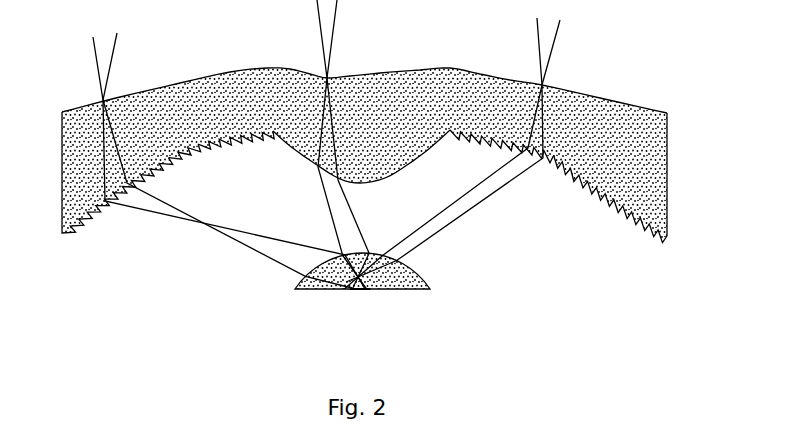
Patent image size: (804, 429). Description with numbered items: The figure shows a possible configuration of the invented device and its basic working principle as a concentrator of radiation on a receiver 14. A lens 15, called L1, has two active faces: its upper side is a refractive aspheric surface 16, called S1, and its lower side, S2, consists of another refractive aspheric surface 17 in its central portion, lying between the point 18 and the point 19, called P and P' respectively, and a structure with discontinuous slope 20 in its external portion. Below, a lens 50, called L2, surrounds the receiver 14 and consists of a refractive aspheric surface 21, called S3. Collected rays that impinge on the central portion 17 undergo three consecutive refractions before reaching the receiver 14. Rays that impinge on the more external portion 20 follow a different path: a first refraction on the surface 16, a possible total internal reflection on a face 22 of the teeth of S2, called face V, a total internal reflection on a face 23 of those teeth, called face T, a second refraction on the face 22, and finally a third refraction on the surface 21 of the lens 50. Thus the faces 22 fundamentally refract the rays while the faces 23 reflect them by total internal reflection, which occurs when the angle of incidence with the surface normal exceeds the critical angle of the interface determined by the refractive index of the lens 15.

The receiver 14 is at (370, 301).
The lens L1 15 is at (364, 155).
The upper refractive surface S1 16 is at (226, 63).
The central refractive aspheric surface 17 is at (411, 179).
The point P 18 is at (442, 120).
The point P' 19 is at (280, 117).
The discontinuous-slope structure 20 is at (568, 193).
The refractive aspheric surface S3 21 is at (447, 274).
The face V 22 is at (210, 156).
The face T 23 is at (183, 170).
The lens L2 50 is at (362, 271).